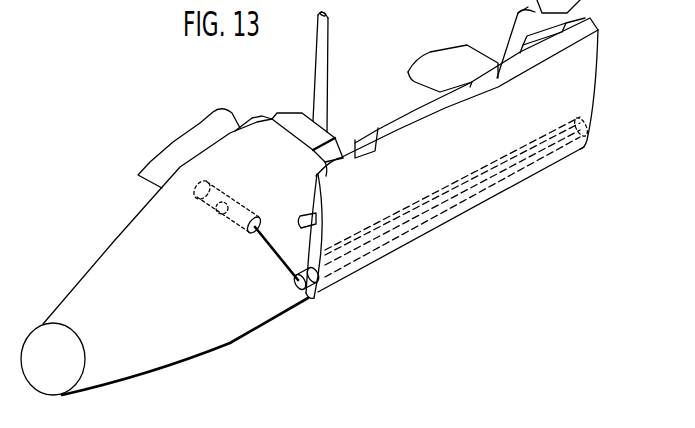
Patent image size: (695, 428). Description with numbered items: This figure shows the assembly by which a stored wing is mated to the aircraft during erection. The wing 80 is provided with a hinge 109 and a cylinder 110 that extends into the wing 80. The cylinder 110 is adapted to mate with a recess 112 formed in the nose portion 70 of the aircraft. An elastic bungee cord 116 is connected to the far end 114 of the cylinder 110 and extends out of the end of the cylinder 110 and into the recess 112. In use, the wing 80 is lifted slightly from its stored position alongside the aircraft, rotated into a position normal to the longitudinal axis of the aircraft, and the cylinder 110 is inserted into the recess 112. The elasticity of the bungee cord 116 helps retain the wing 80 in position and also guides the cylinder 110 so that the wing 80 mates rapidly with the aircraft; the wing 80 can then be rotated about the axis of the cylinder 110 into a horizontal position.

The nose portion 70 is at (72, 313).
The wing 80 is at (376, 150).
The hinge 109 is at (298, 212).
The cylinder 110 is at (452, 188).
The recess 112 is at (252, 233).
The far end of the cylinder 114 is at (586, 148).
The bungee cord 116 is at (515, 155).